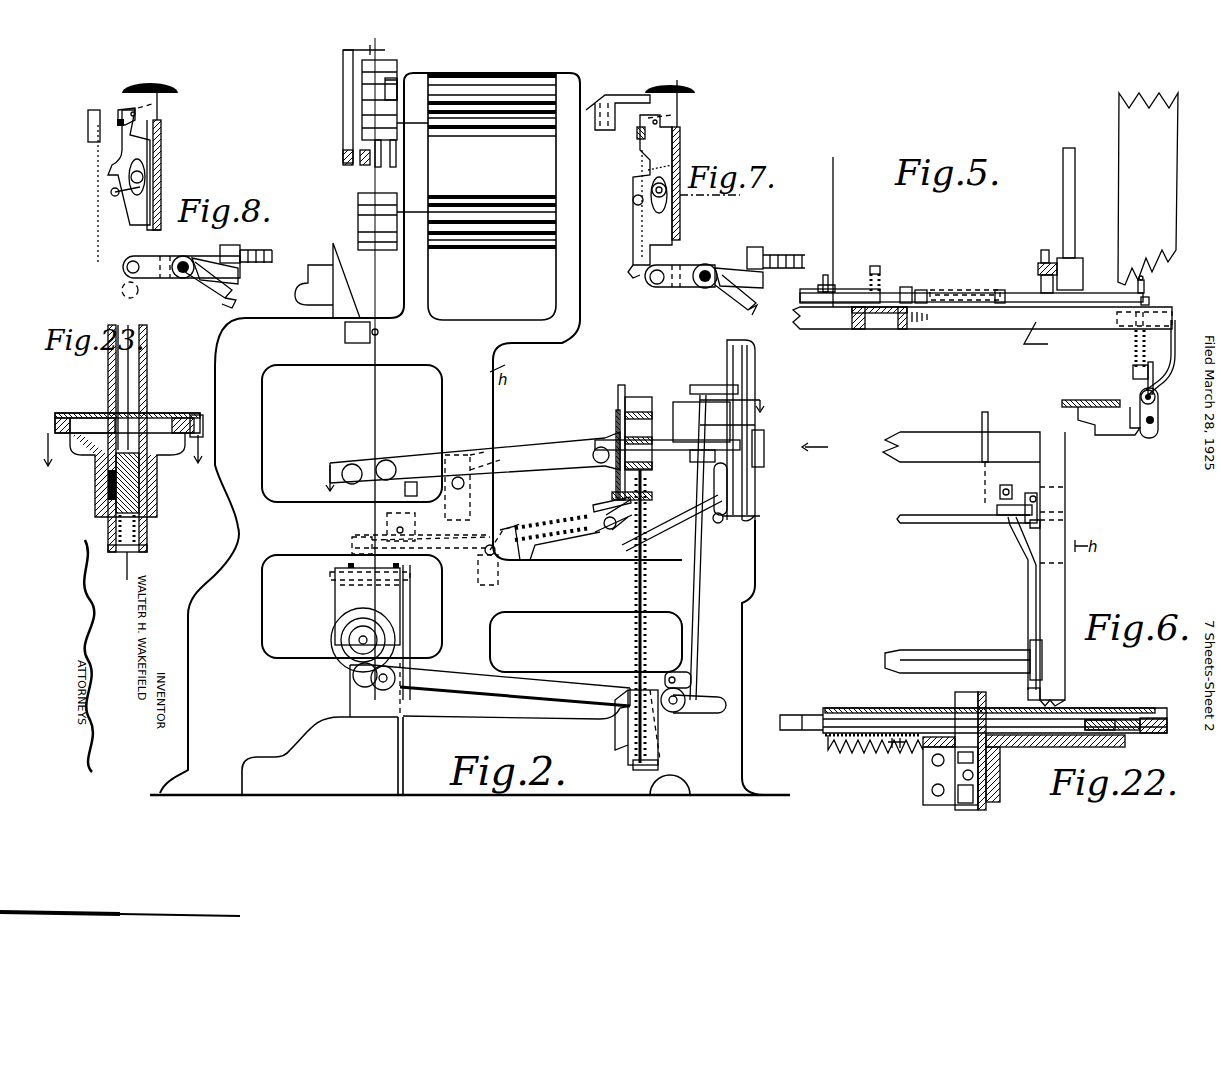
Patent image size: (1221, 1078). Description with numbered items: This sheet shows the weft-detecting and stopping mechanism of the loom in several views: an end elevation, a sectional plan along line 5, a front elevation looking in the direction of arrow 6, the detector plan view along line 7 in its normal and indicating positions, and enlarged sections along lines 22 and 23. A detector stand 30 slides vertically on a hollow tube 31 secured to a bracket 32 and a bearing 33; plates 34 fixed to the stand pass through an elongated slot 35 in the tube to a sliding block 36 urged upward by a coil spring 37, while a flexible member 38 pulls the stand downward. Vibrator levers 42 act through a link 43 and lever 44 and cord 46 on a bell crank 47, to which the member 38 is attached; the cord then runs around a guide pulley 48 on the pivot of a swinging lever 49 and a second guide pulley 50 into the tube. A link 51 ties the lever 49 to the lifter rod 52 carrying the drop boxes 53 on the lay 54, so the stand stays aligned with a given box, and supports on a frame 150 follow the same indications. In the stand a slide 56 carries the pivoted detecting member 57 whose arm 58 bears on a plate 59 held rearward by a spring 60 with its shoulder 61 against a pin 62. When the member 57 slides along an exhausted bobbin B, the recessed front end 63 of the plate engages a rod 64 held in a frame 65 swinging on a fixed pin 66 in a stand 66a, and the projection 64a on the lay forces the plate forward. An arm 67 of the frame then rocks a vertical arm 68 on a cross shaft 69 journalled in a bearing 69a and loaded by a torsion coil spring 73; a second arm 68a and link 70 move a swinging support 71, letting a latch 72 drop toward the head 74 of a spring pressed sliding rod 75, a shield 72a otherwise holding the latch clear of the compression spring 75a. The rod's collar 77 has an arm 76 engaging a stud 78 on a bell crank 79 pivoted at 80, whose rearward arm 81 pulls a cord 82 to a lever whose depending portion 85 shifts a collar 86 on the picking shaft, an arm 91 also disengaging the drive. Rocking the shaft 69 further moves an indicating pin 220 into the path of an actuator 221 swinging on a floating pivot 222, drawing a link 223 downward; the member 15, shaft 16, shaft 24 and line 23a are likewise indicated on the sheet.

In FIG. 2, the section line 5— 5 is at (543, 441).
In FIG. 2, the arrow 6 is at (822, 448).
In FIG. 23, the section line 7— 7 is at (122, 462).
In FIG. 2, the bracket 15 is at (350, 545).
In FIG. 2, the shaft 16 is at (357, 40).
In FIG. 7, the section line 22— 22 is at (616, 95).
In FIG. 7, the section line 23— 23 is at (733, 194).
In FIG. 5, the section line 23— 23 is at (1165, 386).
In FIG. 7, the section line 23a is at (618, 192).
In FIG. 2, the shaft 24 is at (372, 42).
In FIG. 2, the detector stand 30 is at (690, 445).
In FIG. 8, the detector stand 30 is at (161, 142).
In FIG. 7, the detector stand 30 is at (680, 135).
In FIG. 22, the detector stand 30 is at (1010, 748).
In FIG. 23, the detector stand 30 is at (98, 462).
In FIG. 2, the hollow tube 31 is at (695, 566).
In FIG. 22, the hollow tube 31 is at (984, 695).
In FIG. 23, the hollow tube 31 is at (142, 380).
In FIG. 2, the bracket 32 is at (692, 676).
In FIG. 2, the bearing 33 is at (705, 385).
In FIG. 22, the plates 34 is at (925, 776).
In FIG. 23, the plates 34 is at (108, 505).
In FIG. 22, the elongated slot 35 is at (955, 695).
In FIG. 23, the elongated slot 35 is at (120, 408).
In FIG. 22, the sliding block 36 is at (966, 752).
In FIG. 23, the sliding block 36 is at (138, 480).
In FIG. 23, the coil spring 37 is at (138, 532).
In FIG. 2, the flexible member 38 is at (378, 420).
In FIG. 23, the flexible member 38 is at (140, 548).
In FIG. 2, the vibrator lever 42 is at (362, 162).
In FIG. 2, the link 43 is at (362, 92).
In FIG. 2, the lever 44 is at (343, 50).
In FIG. 2, the cord 46 is at (370, 213).
In FIG. 2, the bell crank 47 is at (365, 344).
In FIG. 2, the guide pulley 48 is at (378, 682).
In FIG. 2, the swinging arm or lever 49 is at (712, 712).
In FIG. 2, the second guide pulley 50 is at (688, 698).
In FIG. 2, the link 51 is at (658, 730).
In FIG. 2, the lifter rod 52 is at (640, 768).
In FIG. 2, the drop boxes 53 is at (632, 397).
In FIG. 2, the lay 54 is at (618, 426).
In FIG. 8, the slide 56 is at (153, 127).
In FIG. 7, the slide 56 is at (676, 122).
In FIG. 5, the slide 56 is at (1095, 400).
In FIG. 22, the slide 56 is at (1095, 712).
In FIG. 23, the slide 56 is at (157, 418).
In FIG. 8, the detecting member 57 is at (160, 92).
In FIG. 7, the detecting member 57 is at (682, 97).
In FIG. 22, the detecting member 57 is at (1155, 718).
In FIG. 8, the forwardly projecting arm 58 is at (118, 112).
In FIG. 7, the forwardly projecting arm 58 is at (637, 136).
In FIG. 22, the forwardly projecting arm 58 is at (1115, 725).
In FIG. 8, the plate 59 is at (106, 160).
In FIG. 7, the plate 59 is at (642, 166).
In FIG. 5, the plate 59 is at (1126, 435).
In FIG. 8, the spring 60 is at (150, 157).
In FIG. 7, the spring 60 is at (680, 155).
In FIG. 7, the shoulder 61 is at (634, 200).
In FIG. 8, the pin 62 is at (111, 192).
In FIG. 7, the pin 62 is at (633, 212).
In FIG. 8, the recessed front end 63 is at (125, 262).
In FIG. 7, the recessed front end 63 is at (633, 268).
In FIG. 2, the rod 64 is at (757, 425).
In FIG. 8, the rod 64 is at (130, 272).
In FIG. 7, the rod 64 is at (655, 284).
In FIG. 5, the rod 64 is at (1158, 424).
In FIG. 8, the projection 64a is at (88, 125).
In FIG. 7, the projection 64a is at (600, 119).
In FIG. 8, the frame 65 is at (165, 278).
In FIG. 7, the frame 65 is at (676, 287).
In FIG. 8, the fixed pin 66 is at (185, 274).
In FIG. 7, the fixed pin 66 is at (720, 264).
In FIG. 5, the fixed pin 66 is at (1156, 398).
In FIG. 2, the stand 66a is at (756, 372).
In FIG. 8, the stand 66a is at (230, 300).
In FIG. 7, the stand 66a is at (760, 308).
In FIG. 5, the stand 66a is at (1175, 357).
In FIG. 2, the arm 67 is at (735, 478).
In FIG. 8, the arm 67 is at (240, 282).
In FIG. 7, the arm 67 is at (740, 282).
In FIG. 5, the arm 67 is at (1148, 385).
In FIG. 2, the vertical arm 68 is at (764, 460).
In FIG. 8, the vertical arm 68 is at (235, 245).
In FIG. 7, the vertical arm 68 is at (757, 250).
In FIG. 5, the vertical arm 68 is at (1133, 371).
In FIG. 5, the second arm 68a is at (1149, 301).
In FIG. 2, the cross shaft 69 is at (745, 516).
In FIG. 8, the cross shaft 69 is at (272, 258).
In FIG. 7, the cross shaft 69 is at (805, 262).
In FIG. 5, the cross shaft 69 is at (1145, 284).
In FIG. 6, the cross shaft 69 is at (925, 515).
In FIG. 5, the bearing 69a is at (1120, 335).
In FIG. 2, the link 70 is at (655, 520).
In FIG. 5, the link 70 is at (971, 287).
In FIG. 2, the swinging support 71 is at (603, 525).
In FIG. 2, the latch 72 is at (604, 503).
In FIG. 5, the latch 72 is at (1020, 290).
In FIG. 2, the shield 72a is at (545, 520).
In FIG. 5, the shield 72a is at (965, 278).
In FIG. 8, the torsion coil spring 73 is at (262, 264).
In FIG. 7, the torsion coil spring 73 is at (790, 256).
In FIG. 5, the torsion coil spring 73 is at (1134, 345).
In FIG. 2, the head 74 is at (600, 535).
In FIG. 5, the head 74 is at (1000, 290).
In FIG. 5, the sliding rod 75 is at (855, 290).
In FIG. 2, the compression spring 75a is at (545, 540).
In FIG. 2, the arm 76 is at (500, 520).
In FIG. 2, the collar 77 is at (483, 568).
In FIG. 5, the collar 77 is at (913, 283).
In FIG. 2, the stud 78 is at (460, 520).
In FIG. 2, the bell crank 79 is at (472, 478).
In FIG. 2, the pivot 80 is at (585, 440).
In FIG. 5, the pivot 80 is at (877, 266).
In FIG. 2, the rearwardly projecting arm 81 is at (415, 470).
In FIG. 2, the cord 82 is at (398, 493).
In FIG. 5, the cord 82 is at (833, 218).
In FIG. 2, the depending portion 85 is at (337, 605).
In FIG. 2, the collar 86 is at (345, 648).
In FIG. 2, the arm 91 is at (410, 612).
In FIG. 2, the frame 150 is at (336, 265).
In FIG. 6, the indicating pin 220 is at (1036, 496).
In FIG. 6, the actuator 221 is at (1012, 487).
In FIG. 6, the floating pivot 222 is at (1000, 495).
In FIG. 6, the link 223 is at (988, 414).
In FIG. 8, the bobbin B is at (152, 95).
In FIG. 7, the bobbin B is at (670, 77).